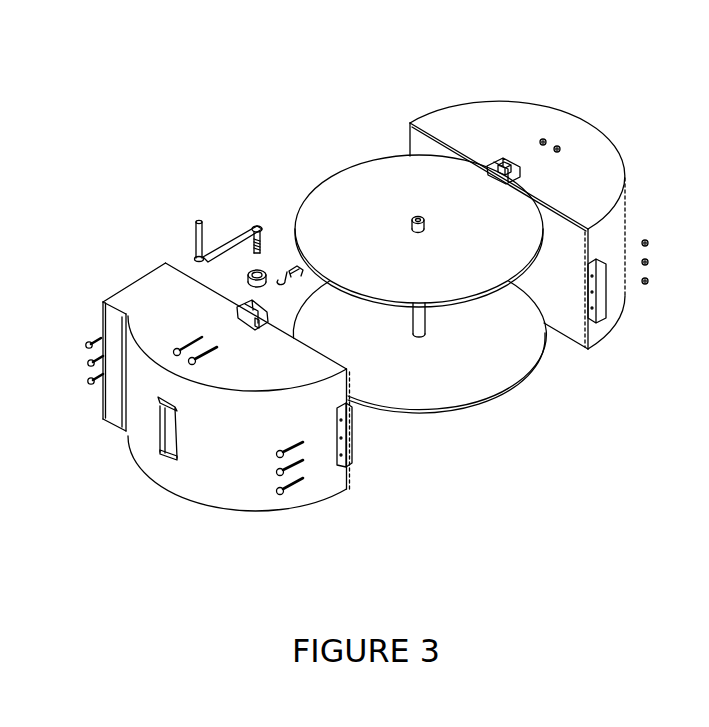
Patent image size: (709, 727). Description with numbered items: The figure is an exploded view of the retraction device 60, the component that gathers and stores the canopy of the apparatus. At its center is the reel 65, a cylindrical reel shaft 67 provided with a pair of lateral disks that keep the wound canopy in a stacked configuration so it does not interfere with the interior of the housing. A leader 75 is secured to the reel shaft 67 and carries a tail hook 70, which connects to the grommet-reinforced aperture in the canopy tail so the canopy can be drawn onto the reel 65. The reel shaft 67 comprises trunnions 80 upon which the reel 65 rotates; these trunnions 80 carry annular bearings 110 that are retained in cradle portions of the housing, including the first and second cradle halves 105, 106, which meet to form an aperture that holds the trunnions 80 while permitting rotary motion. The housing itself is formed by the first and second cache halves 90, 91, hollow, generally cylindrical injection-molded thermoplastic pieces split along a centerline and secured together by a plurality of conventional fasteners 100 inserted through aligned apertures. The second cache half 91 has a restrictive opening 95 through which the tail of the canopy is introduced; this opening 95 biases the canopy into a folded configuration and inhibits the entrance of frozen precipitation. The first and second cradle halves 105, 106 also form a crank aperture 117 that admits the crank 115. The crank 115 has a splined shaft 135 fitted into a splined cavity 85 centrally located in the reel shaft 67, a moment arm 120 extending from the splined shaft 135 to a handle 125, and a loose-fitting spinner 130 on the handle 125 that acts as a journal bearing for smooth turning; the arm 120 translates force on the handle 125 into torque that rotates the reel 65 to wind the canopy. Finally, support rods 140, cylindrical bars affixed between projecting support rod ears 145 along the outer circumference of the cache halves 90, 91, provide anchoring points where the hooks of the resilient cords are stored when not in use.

The retraction device 60 is at (213, 117).
The reel 65 is at (484, 368).
The reel shaft 67 is at (421, 337).
The tail hook 70 is at (281, 278).
The leader 75 is at (299, 265).
The trunnions 80 is at (414, 222).
The splined cavity 85 is at (417, 218).
The first cache half 90 is at (616, 170).
The second cache half 91 is at (302, 373).
The opening 95 is at (110, 402).
The fasteners 100 is at (189, 360).
The first cradle half 105 is at (507, 162).
The second cradle half 106 is at (237, 312).
The annular bearings 110 is at (248, 277).
The crank 115 is at (167, 197).
The crank aperture 117 is at (497, 162).
The moment arm 120 is at (230, 242).
The handle 125 is at (197, 222).
The spinner 130 is at (201, 242).
The splined shaft 135 is at (255, 243).
The support rods 140 is at (158, 443).
The support rod ears 145 is at (171, 459).